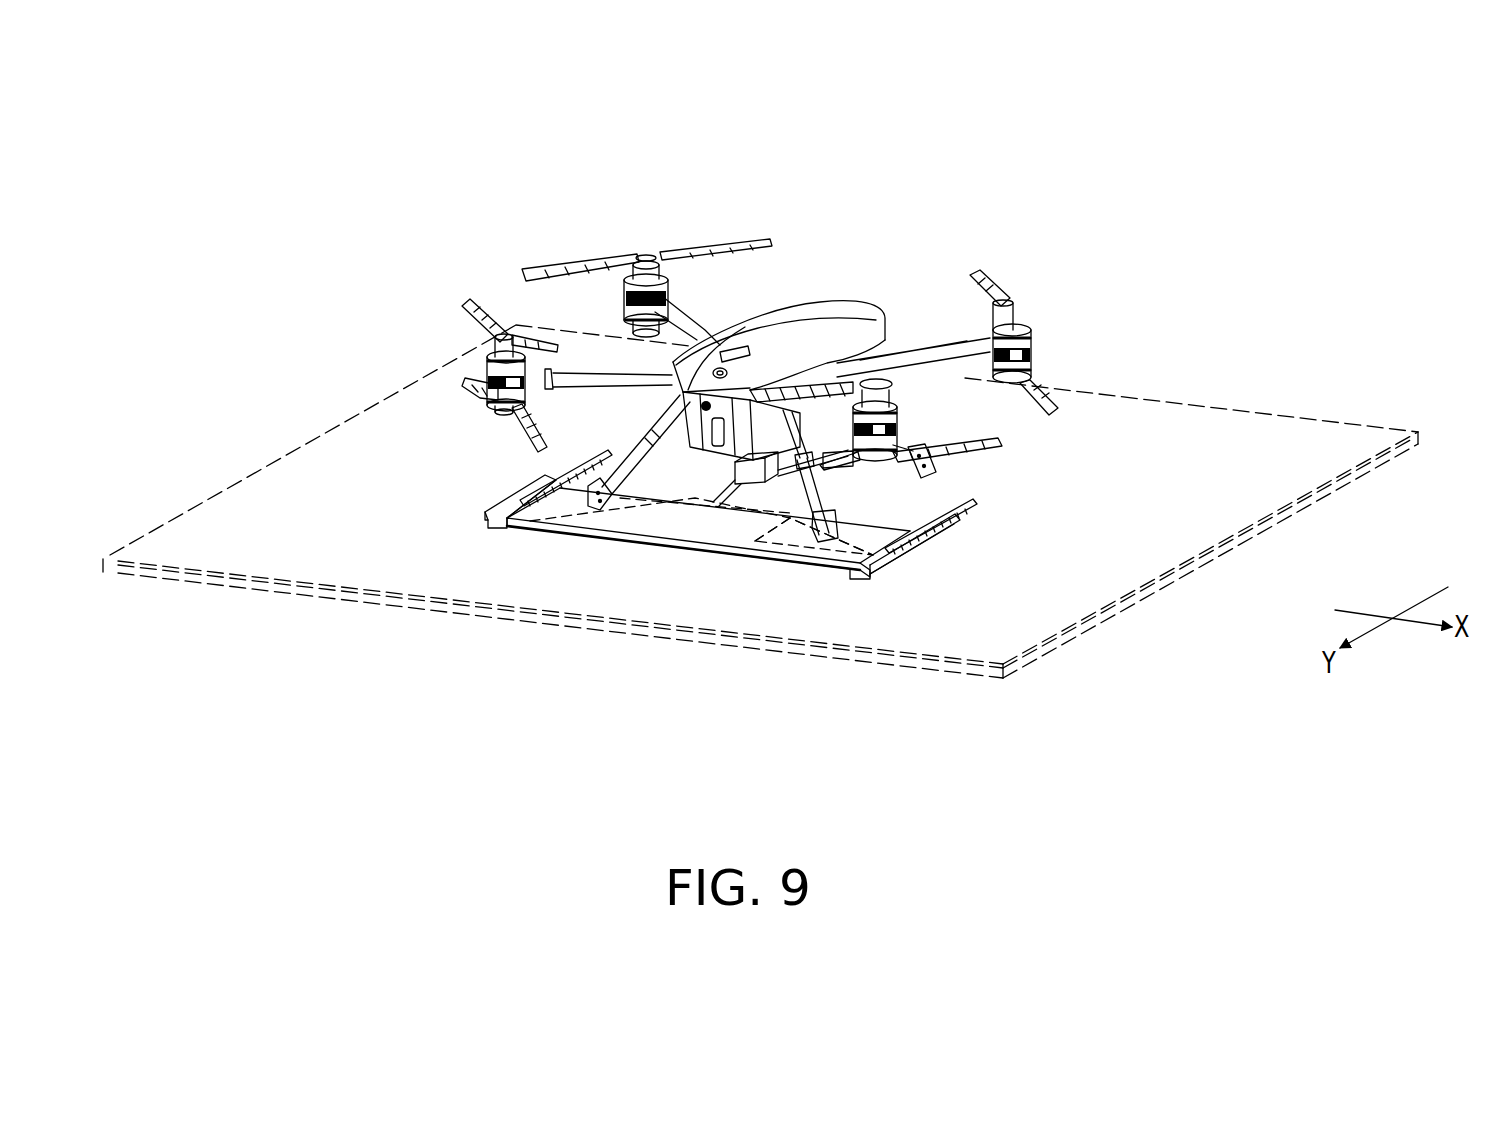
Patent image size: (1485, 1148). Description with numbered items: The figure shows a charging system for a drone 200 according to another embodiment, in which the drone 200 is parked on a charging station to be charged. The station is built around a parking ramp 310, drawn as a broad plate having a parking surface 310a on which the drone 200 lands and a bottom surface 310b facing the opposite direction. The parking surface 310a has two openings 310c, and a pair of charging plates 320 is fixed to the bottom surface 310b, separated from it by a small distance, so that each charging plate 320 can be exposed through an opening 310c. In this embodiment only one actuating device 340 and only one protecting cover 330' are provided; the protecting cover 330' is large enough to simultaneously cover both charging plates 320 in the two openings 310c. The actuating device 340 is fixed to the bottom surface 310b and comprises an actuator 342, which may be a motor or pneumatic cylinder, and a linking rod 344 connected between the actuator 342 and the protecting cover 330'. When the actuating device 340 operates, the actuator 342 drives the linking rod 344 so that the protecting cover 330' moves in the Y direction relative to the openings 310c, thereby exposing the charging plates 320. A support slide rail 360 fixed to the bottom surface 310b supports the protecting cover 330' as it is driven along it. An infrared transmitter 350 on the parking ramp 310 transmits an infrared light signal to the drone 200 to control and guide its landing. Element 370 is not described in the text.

The drone 200 is at (853, 302).
The parking ramp 310 is at (227, 95).
The parking surface 310a is at (432, 398).
The bottom surface 310b is at (237, 643).
The opening 310c is at (553, 515).
The charging plate 320 is at (897, 565).
The protecting cover 330' is at (701, 623).
The charging module 370 is at (814, 536).
The actuating device 340 is at (536, 718).
The actuator 342 is at (612, 472).
The linking rod 344 is at (725, 482).
The infrared transmitter 350 is at (805, 470).
The support slide rail 360 is at (977, 510).